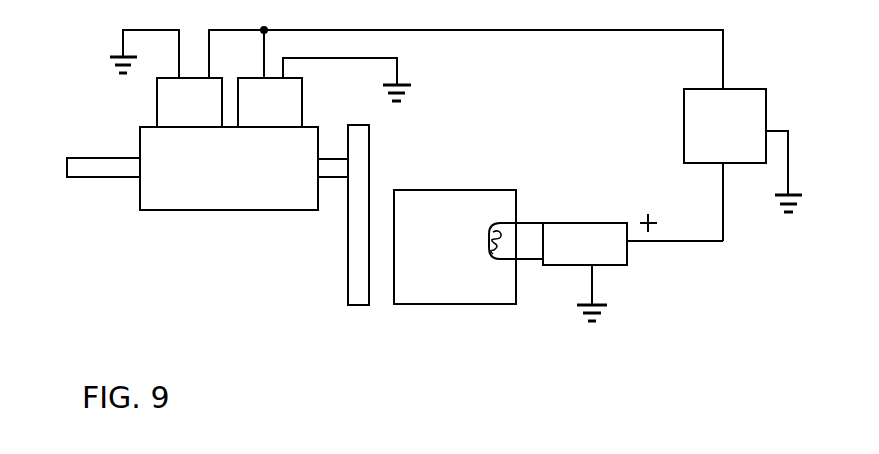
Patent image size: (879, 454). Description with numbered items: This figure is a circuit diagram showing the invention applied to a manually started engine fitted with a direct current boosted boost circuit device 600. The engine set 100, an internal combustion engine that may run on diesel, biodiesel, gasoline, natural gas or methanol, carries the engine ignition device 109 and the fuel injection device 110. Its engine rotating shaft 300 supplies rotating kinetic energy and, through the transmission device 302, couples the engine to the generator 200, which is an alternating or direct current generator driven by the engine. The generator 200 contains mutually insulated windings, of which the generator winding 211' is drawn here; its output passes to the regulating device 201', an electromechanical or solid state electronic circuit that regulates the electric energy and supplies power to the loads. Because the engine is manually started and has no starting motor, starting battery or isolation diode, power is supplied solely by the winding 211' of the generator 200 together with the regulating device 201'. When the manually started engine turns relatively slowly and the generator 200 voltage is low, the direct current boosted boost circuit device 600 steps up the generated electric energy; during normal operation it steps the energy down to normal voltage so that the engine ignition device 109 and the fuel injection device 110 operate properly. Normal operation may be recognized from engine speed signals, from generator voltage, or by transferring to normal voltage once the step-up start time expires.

The engine set 100 is at (229, 168).
The engine ignition device 109 is at (270, 102).
The fuel injection device 110 is at (189, 102).
The generator 200 is at (455, 247).
The regulating device 201' is at (585, 244).
The generator winding 211' is at (482, 194).
The engine rotating shaft 300 is at (107, 158).
The transmission device 302 is at (358, 270).
The direct current boosted boost circuit device 600 is at (725, 126).